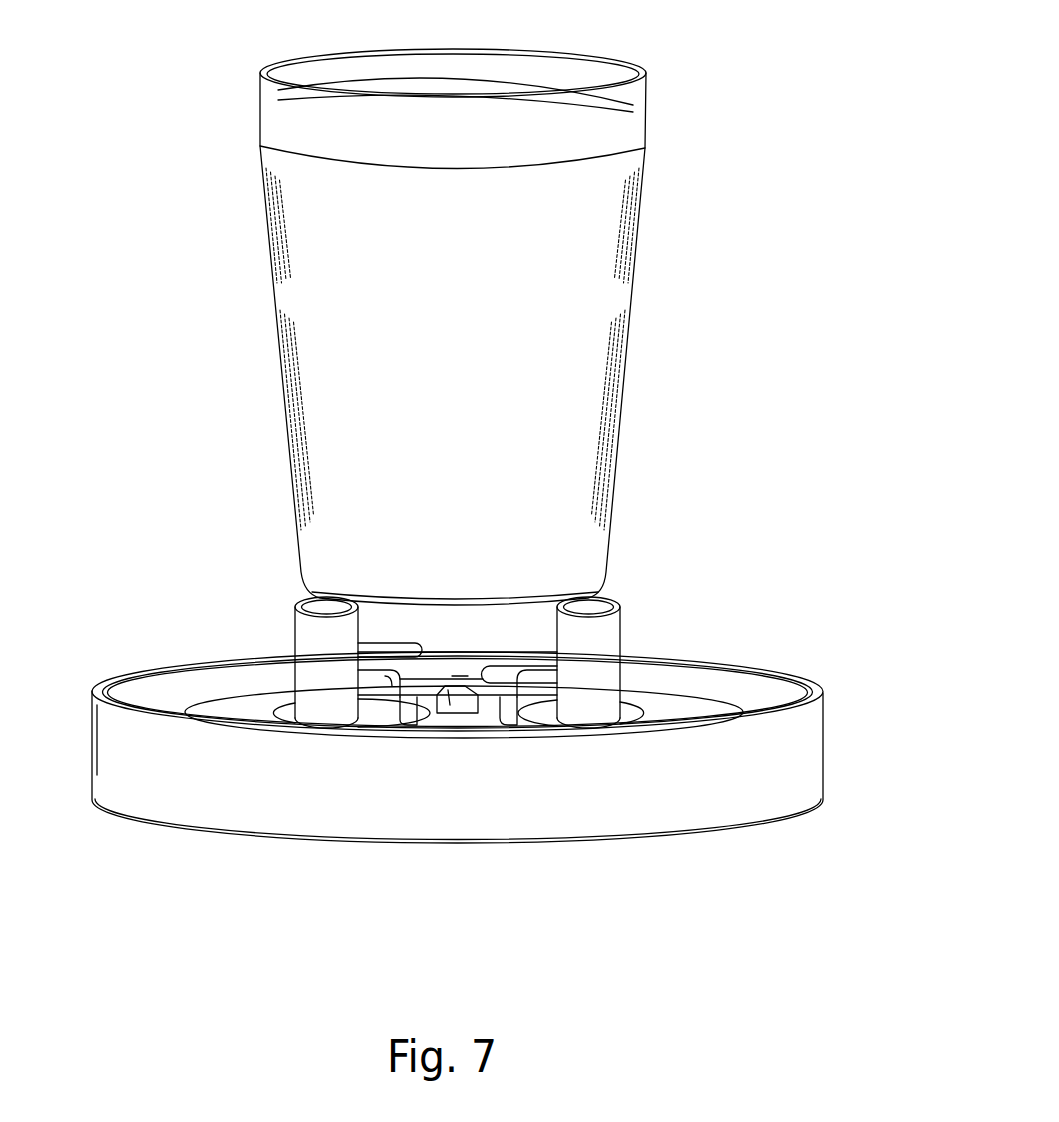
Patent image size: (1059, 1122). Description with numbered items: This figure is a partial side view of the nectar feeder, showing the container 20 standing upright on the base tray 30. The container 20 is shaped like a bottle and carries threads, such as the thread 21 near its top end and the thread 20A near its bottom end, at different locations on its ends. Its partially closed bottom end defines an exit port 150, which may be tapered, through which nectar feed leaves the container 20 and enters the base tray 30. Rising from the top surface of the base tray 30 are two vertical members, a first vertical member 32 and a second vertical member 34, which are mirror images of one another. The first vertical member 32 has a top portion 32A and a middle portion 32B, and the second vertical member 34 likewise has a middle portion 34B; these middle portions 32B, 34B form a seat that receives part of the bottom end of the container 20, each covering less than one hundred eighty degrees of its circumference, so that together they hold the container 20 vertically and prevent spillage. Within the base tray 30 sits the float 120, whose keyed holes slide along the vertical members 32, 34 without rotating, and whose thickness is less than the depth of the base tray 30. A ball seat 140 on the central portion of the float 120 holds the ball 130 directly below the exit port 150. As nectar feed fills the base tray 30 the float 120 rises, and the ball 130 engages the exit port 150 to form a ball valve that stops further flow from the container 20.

The container 20 is at (632, 300).
The thread 21 is at (552, 85).
The thread 20A is at (295, 623).
The base tray 30 is at (826, 737).
The first vertical member 32 is at (621, 630).
The top portion of first vertical member 32A is at (592, 600).
The middle portion of first vertical member 32B is at (548, 700).
The second vertical member 34 is at (295, 643).
The middle portion of second vertical member 34B is at (277, 727).
The float 120 is at (735, 705).
The ball 130 is at (455, 683).
The ball seat 140 is at (470, 713).
The exit port 150 is at (460, 678).